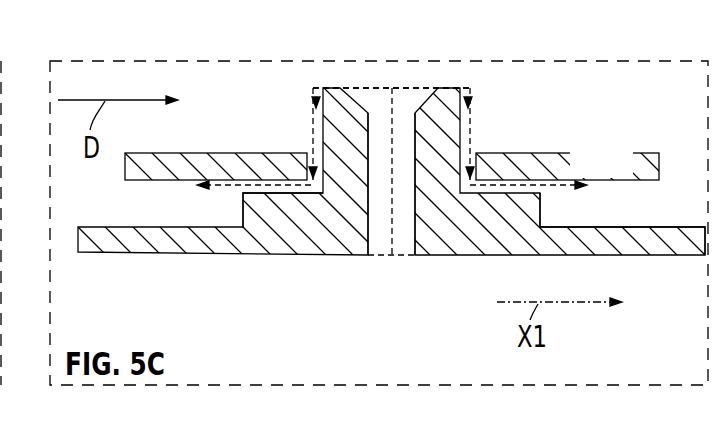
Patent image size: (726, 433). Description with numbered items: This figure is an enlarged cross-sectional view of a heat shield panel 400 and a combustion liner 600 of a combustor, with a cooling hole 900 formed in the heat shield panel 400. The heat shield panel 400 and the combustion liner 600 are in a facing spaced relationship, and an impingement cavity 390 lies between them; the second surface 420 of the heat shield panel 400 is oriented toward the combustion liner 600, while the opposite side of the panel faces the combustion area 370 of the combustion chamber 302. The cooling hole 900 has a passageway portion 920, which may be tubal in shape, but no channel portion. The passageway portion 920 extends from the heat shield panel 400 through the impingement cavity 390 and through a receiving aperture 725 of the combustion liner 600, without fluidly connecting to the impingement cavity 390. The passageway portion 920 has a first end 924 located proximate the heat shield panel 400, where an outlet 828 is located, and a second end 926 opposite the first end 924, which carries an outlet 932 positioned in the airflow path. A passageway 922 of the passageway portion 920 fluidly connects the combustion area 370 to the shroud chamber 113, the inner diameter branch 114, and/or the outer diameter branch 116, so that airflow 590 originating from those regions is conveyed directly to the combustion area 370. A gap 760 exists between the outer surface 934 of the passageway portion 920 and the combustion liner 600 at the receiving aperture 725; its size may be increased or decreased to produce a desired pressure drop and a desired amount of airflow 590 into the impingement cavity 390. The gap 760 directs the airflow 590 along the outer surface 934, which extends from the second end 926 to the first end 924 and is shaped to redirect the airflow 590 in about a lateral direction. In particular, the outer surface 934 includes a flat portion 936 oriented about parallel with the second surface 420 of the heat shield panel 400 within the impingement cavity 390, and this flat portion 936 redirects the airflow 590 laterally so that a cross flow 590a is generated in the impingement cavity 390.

The cooling hole 900 is at (395, 52).
The second end 926 is at (338, 100).
The outlet 932 is at (418, 88).
The gap 760 is at (316, 98).
The receiving aperture 725 is at (305, 170).
The shroud chamber 113 is at (631, 97).
The inner diameter branch 114 is at (631, 97).
The outer diameter branch 116 is at (700, 113).
The airflow 590 is at (473, 139).
The combustion liner 600 is at (622, 171).
The second surface 420 is at (657, 227).
The impingement cavity 390 is at (177, 213).
The heat shield panel 400 is at (493, 132).
The outer surface 934 is at (330, 160).
The passageway 922 is at (408, 165).
The flat portion 936 is at (278, 195).
The first end 924 is at (340, 240).
The outlet 828 is at (411, 196).
The passageway portion 920 is at (395, 223).
The cross flow 590a is at (548, 188).
The combustion chamber 302 is at (363, 182).
The combustion area 370 is at (363, 182).